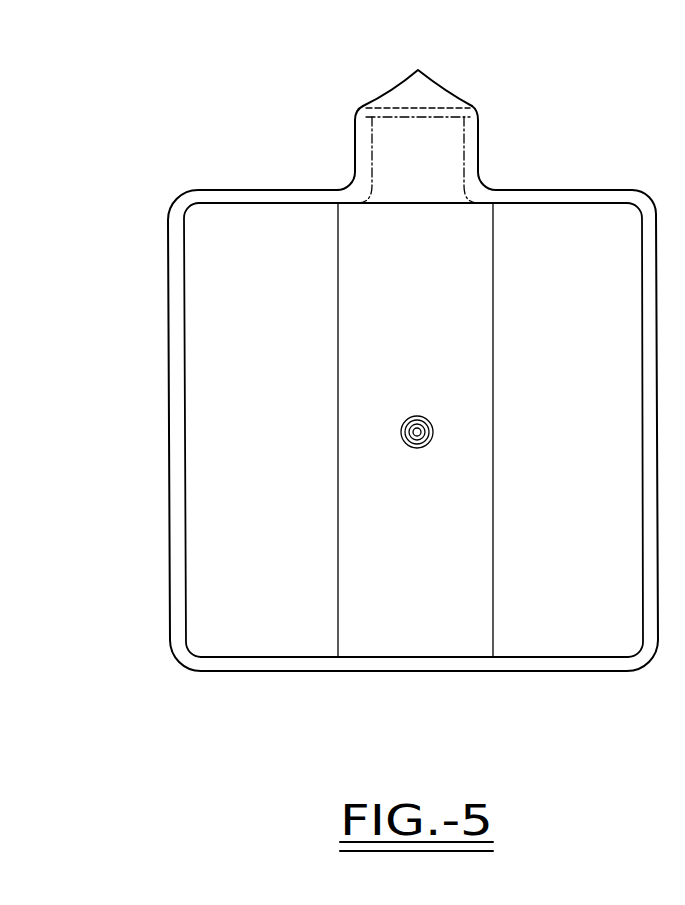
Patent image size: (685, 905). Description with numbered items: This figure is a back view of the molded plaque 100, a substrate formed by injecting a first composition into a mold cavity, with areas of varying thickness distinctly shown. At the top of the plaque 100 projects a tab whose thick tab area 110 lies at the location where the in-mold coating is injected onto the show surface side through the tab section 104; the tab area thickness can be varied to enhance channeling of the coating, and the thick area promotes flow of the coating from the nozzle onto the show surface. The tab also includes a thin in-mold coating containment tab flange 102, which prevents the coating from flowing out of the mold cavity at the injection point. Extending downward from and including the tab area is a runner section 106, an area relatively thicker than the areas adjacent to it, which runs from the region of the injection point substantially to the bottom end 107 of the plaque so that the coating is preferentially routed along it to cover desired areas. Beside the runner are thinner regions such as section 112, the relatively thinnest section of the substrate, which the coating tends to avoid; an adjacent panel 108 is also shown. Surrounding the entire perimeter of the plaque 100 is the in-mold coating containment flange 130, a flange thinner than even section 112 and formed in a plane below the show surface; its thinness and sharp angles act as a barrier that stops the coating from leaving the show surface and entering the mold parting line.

The plaque 100 is at (265, 176).
The in-mold coating containment tab flange 102 is at (481, 130).
The tab section 104 is at (412, 88).
The runner section 106 is at (420, 636).
The bottom end 107 is at (463, 658).
The left panel 108 is at (268, 636).
The tab area 110 is at (453, 165).
The section 112 is at (564, 636).
The in-mold coating containment flange 130 is at (176, 308).